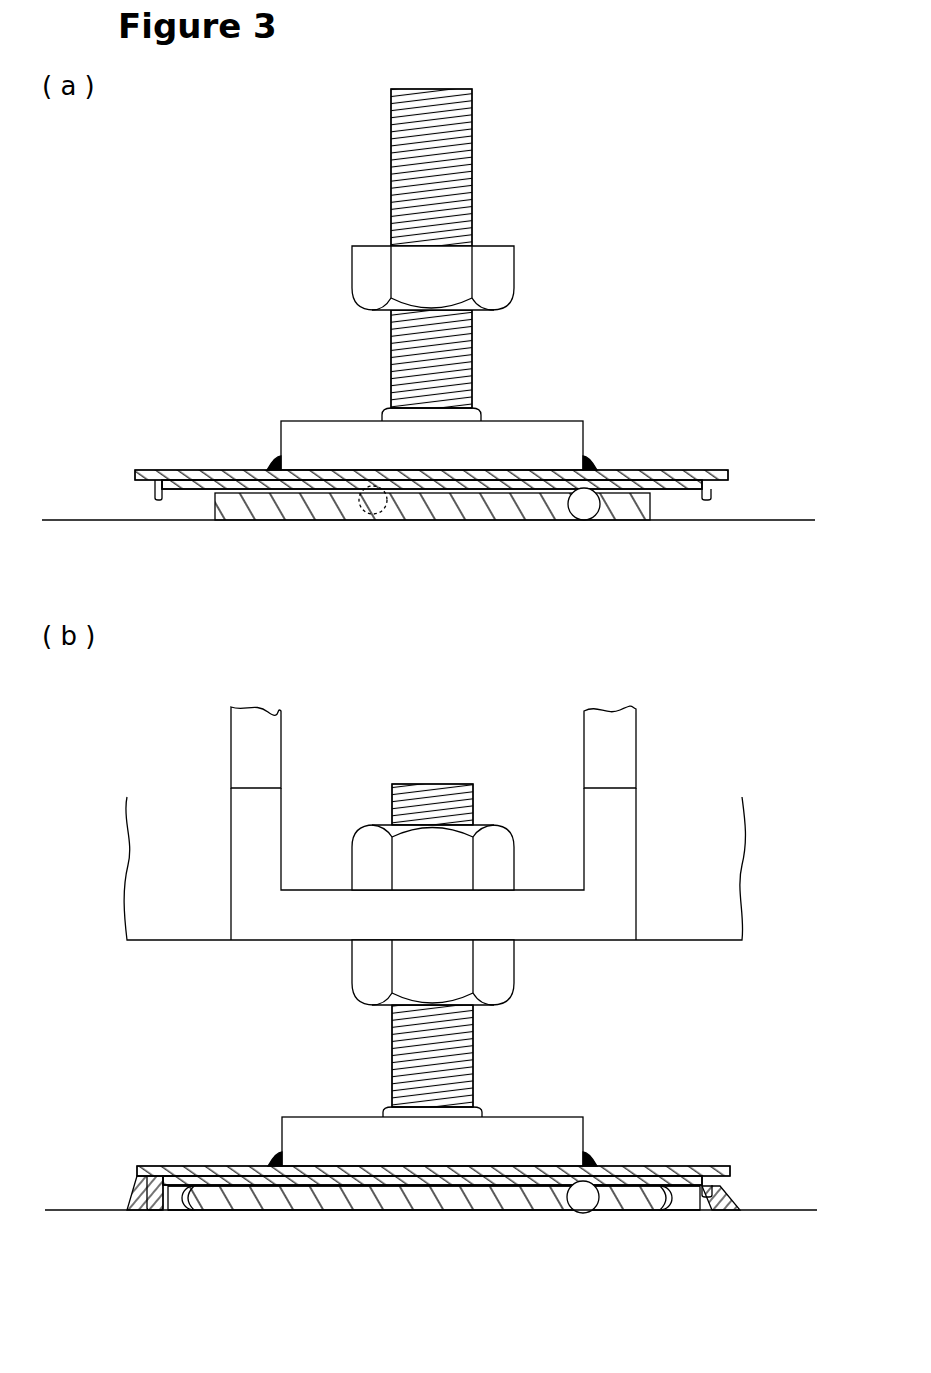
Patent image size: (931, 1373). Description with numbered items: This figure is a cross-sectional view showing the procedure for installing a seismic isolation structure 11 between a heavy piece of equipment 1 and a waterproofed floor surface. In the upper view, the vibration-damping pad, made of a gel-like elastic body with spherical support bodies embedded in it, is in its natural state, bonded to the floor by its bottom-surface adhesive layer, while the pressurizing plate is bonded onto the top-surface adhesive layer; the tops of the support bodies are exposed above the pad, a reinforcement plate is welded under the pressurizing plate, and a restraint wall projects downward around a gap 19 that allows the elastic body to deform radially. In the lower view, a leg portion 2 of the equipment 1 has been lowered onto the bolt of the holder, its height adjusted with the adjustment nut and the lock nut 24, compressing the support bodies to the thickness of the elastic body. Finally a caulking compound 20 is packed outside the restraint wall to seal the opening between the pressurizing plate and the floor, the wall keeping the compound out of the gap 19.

The equipment 1 is at (176, 947).
The leg portion 2 is at (230, 757).
The seismic isolation structure 11 is at (178, 326).
The gap 19 is at (183, 1198).
The caulking compound 20 is at (136, 1195).
The lock nut 24 is at (498, 835).